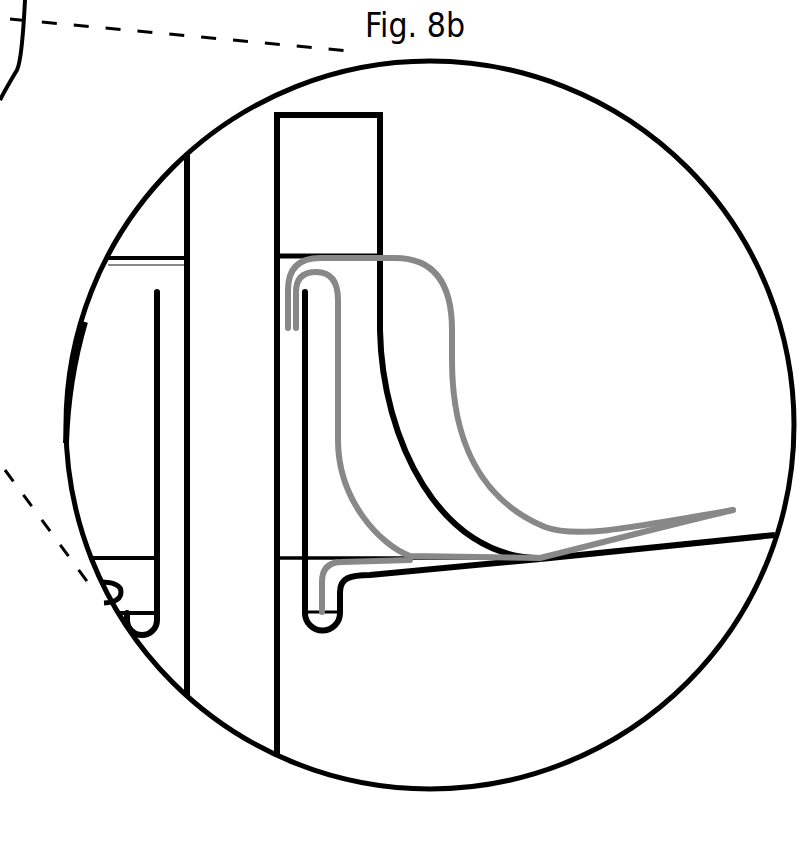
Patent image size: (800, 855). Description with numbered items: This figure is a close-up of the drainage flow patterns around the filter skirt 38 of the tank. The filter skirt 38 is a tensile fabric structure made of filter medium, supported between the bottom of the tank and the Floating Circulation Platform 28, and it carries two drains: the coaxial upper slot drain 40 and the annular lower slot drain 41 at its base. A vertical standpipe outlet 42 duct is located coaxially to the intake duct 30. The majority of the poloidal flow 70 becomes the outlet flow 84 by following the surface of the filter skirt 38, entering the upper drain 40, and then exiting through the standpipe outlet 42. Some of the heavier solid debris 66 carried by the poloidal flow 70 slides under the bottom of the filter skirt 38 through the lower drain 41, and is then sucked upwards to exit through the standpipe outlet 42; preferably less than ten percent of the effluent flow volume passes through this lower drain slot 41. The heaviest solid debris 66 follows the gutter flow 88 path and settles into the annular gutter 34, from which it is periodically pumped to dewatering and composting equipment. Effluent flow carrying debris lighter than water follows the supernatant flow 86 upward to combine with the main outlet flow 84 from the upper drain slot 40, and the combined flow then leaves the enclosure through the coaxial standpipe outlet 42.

The Floating Circulation Platform 28 is at (400, 148).
The intake duct 30 is at (283, 722).
The annular gutter 34 is at (350, 607).
The filter skirt 38 is at (443, 517).
The coaxial upper slot drain 40 is at (395, 252).
The annular lower slot drain 41 is at (533, 553).
The standpipe outlet 42 is at (153, 407).
The solid debris 66 is at (333, 637).
The poloidal flow 70 is at (750, 495).
The outlet flow 84 is at (458, 372).
The supernatant flow 86 is at (352, 437).
The gutter flow 88 is at (345, 552).